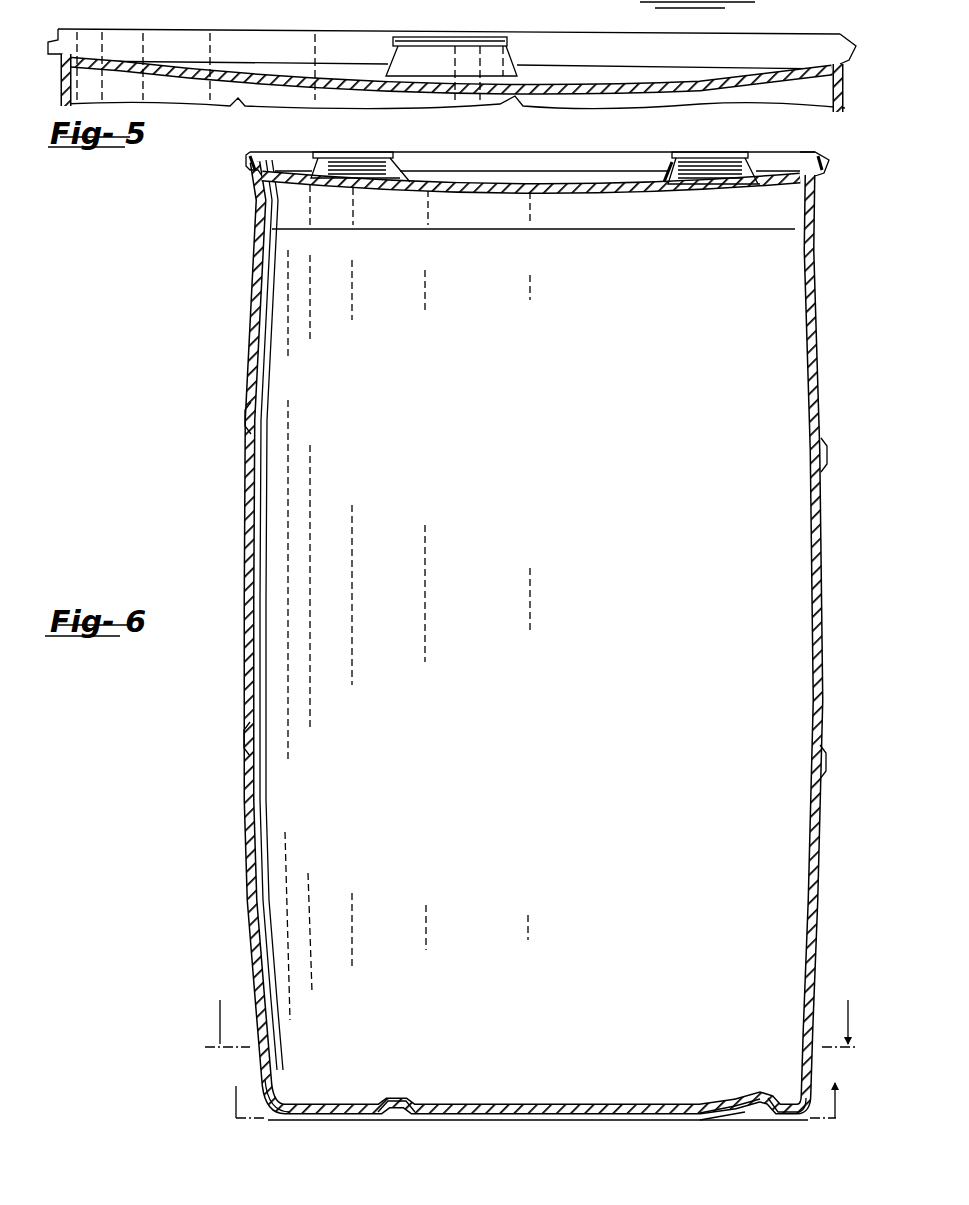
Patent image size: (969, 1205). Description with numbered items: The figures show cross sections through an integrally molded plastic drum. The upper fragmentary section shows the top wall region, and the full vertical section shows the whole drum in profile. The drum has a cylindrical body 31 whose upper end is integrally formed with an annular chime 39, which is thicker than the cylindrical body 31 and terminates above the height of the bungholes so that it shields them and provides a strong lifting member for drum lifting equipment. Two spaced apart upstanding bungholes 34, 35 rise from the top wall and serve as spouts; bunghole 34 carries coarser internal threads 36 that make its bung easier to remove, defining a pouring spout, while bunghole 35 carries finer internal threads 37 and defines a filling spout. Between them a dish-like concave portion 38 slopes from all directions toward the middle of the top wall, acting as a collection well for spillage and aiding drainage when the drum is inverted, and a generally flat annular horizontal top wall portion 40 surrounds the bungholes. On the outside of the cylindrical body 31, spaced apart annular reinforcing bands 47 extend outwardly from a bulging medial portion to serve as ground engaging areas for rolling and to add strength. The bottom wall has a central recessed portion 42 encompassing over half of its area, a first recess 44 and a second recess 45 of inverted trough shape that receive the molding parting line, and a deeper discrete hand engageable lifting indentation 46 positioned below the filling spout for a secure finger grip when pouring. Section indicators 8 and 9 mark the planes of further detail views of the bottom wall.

In FIG. 6, the cylindrical body 31 is at (246, 527).
In FIG. 5, the bunghole 34 is at (455, 38).
In FIG. 6, the bunghole 34 is at (336, 160).
In FIG. 6, the bunghole 35 is at (727, 180).
In FIG. 6, the internal threads 36 is at (367, 164).
In FIG. 6, the internal threads 37 is at (690, 162).
In FIG. 5, the concave portion 38 is at (300, 80).
In FIG. 6, the concave portion 38 is at (558, 187).
In FIG. 5, the annular chime 39 is at (48, 42).
In FIG. 6, the annular chime 39 is at (247, 158).
In FIG. 5, the annular horizontal top wall portion 40 is at (90, 62).
In FIG. 6, the annular horizontal top wall portion 40 is at (790, 165).
In FIG. 6, the central recessed portion 42 is at (478, 1114).
In FIG. 6, the first recess 44 is at (305, 1116).
In FIG. 6, the second recess 45 is at (798, 1120).
In FIG. 6, the hand engageable lifting indentation 46 is at (745, 1112).
In FIG. 6, the annular reinforcing bands 47 is at (246, 418).
In FIG. 6, the section line 8 is at (525, 1023).
In FIG. 6, the section line 9 is at (522, 1098).